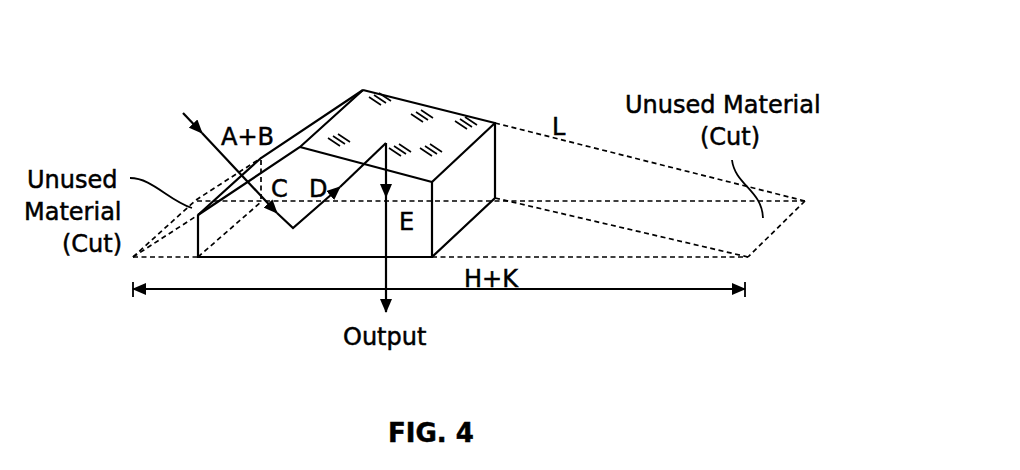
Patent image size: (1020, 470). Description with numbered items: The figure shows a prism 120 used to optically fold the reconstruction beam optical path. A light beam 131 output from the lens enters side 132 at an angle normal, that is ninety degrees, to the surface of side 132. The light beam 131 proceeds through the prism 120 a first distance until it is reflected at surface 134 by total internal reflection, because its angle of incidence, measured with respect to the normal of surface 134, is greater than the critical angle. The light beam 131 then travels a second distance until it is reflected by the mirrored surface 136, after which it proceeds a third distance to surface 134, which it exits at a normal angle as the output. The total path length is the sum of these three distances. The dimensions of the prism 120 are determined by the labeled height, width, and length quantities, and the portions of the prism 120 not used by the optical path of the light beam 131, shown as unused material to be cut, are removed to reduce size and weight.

The prism 120 is at (408, 60).
The light beam 131 is at (192, 122).
The side 132 is at (300, 146).
The surface 134 is at (340, 246).
The mirrored surface 136 is at (431, 110).